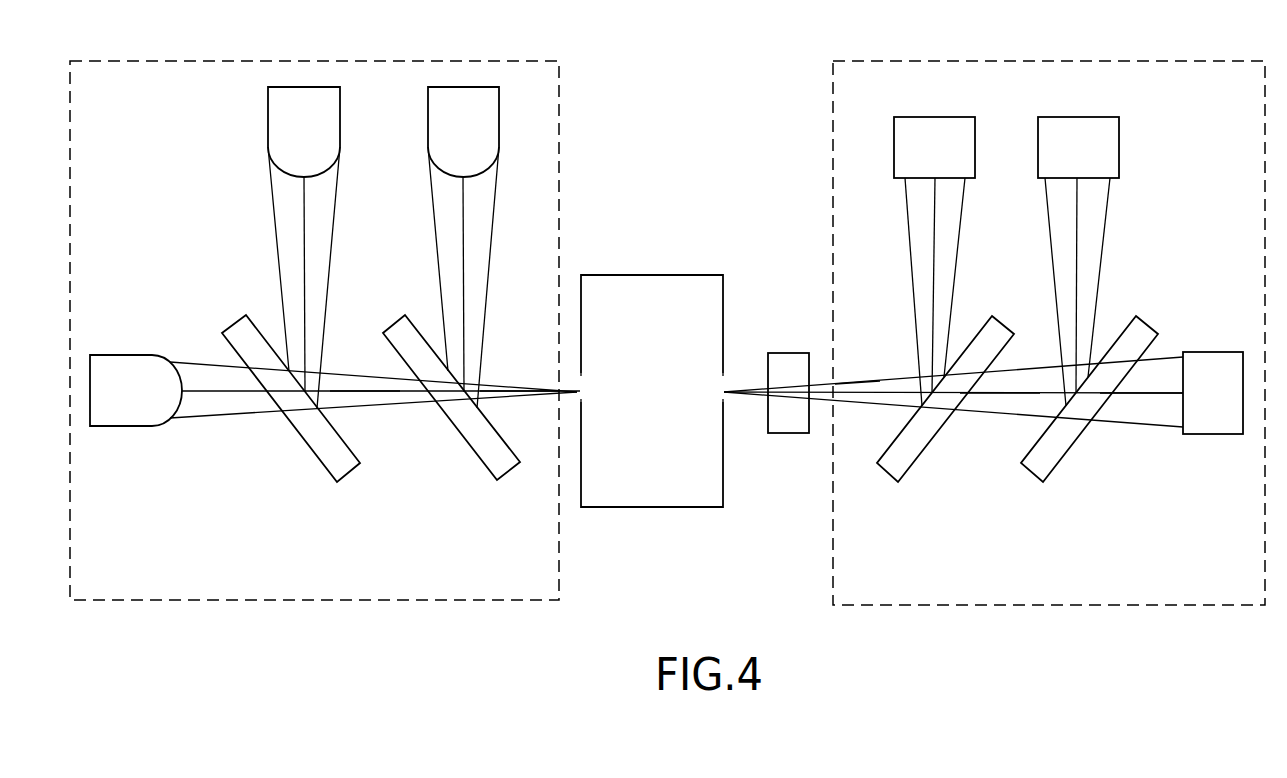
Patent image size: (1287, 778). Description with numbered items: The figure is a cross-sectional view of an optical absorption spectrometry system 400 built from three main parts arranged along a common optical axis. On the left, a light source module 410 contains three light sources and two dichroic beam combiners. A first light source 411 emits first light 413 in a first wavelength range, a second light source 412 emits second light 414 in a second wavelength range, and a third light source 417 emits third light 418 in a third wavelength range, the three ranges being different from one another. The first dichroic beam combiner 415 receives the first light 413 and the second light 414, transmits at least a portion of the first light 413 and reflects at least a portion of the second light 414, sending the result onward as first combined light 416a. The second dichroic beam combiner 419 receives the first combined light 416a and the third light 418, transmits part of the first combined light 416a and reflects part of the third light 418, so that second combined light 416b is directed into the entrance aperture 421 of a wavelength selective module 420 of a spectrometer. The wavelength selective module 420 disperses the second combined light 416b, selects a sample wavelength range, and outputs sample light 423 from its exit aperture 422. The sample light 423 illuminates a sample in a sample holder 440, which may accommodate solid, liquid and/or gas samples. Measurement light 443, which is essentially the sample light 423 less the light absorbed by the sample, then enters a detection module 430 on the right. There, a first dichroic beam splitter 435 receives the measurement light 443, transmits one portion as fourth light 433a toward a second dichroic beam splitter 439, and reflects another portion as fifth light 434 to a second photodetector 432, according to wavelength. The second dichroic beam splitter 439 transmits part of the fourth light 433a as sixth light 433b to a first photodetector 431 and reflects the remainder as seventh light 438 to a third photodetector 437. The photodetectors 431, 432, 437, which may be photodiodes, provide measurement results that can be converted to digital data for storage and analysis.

The optical absorption spectrometry system 400 is at (712, 87).
The light source module 410 is at (148, 118).
The first light source 411 is at (143, 400).
The second light source 412 is at (321, 136).
The first light 413 is at (215, 382).
The second light 414 is at (305, 221).
The first dichroic beam combiner 415 is at (302, 437).
The first combined light 416a is at (345, 392).
The second combined light 416b is at (500, 382).
The third light source 417 is at (480, 136).
The third light 418 is at (463, 221).
The second dichroic beam combiner 419 is at (462, 437).
The wavelength selective module 420 is at (670, 326).
The entrance aperture 421 is at (582, 402).
The exit aperture 422 is at (723, 403).
The sample light 423 is at (741, 392).
The detection module 430 is at (1238, 109).
The first photodetector 431 is at (1230, 408).
The second photodetector 432 is at (951, 159).
The fourth light 433a is at (1002, 392).
The sixth light 433b is at (1166, 393).
The fifth light 434 is at (935, 230).
The first dichroic beam splitter 435 is at (910, 468).
The third photodetector 437 is at (1095, 159).
The seventh light 438 is at (1077, 230).
The second dichroic beam splitter 439 is at (1052, 468).
The sample holder 440 is at (793, 433).
The measurement light 443 is at (867, 398).